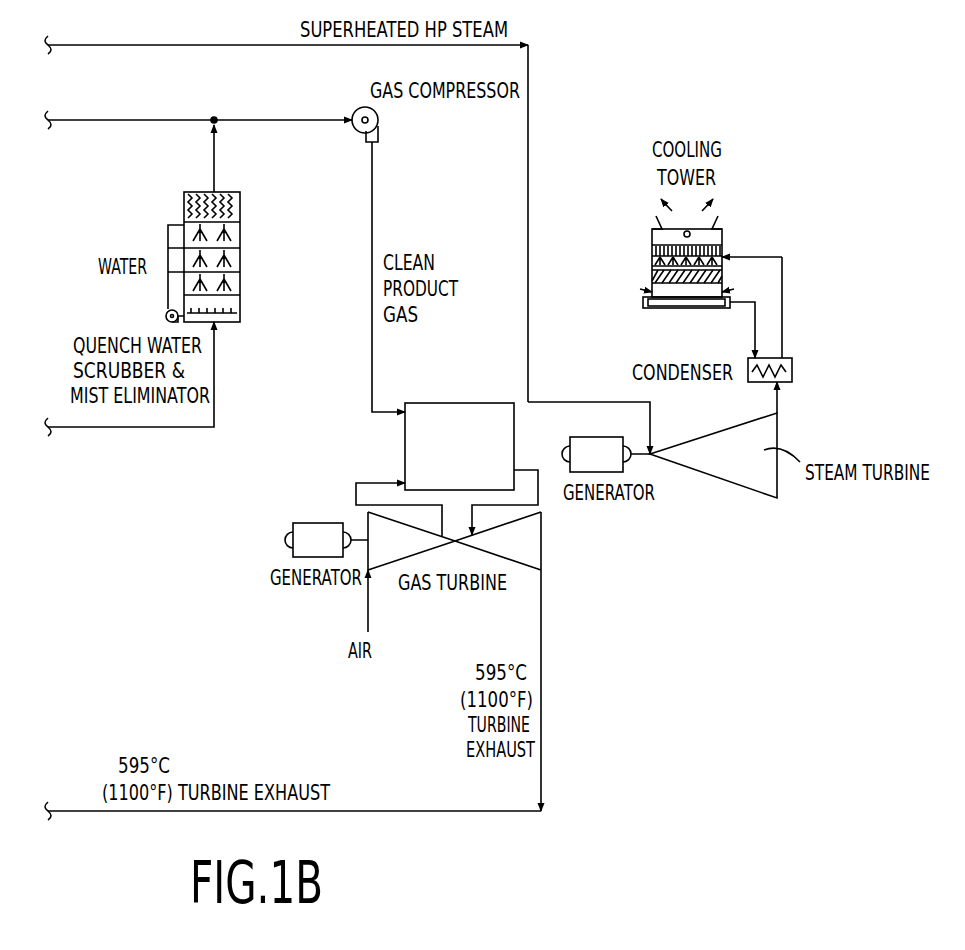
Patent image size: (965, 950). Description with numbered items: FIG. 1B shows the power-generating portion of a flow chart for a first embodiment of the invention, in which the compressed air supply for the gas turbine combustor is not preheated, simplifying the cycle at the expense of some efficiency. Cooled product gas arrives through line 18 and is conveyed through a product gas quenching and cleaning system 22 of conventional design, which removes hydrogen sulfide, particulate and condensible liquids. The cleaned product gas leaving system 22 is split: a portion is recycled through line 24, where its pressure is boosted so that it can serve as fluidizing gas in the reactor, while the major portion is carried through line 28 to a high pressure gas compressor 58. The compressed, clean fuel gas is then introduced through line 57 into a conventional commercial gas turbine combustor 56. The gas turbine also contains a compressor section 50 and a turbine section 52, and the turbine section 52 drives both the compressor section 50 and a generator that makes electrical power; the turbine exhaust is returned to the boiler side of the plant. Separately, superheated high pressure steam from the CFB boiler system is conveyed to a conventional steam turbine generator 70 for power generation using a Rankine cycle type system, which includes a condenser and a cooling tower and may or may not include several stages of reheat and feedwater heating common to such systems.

The product gas line 18 is at (85, 427).
The product gas quenching and cleaning system 22 is at (184, 212).
The recycle line 24 is at (177, 121).
The product gas line to gas compressor 28 is at (293, 120).
The compressor section 50 is at (382, 558).
The turbine section 52 is at (535, 568).
The gas turbine combustor 56 is at (497, 403).
The compressed fuel gas line 57 is at (372, 207).
The high pressure gas compressor 58 is at (379, 127).
The steam turbine generator 70 is at (722, 431).